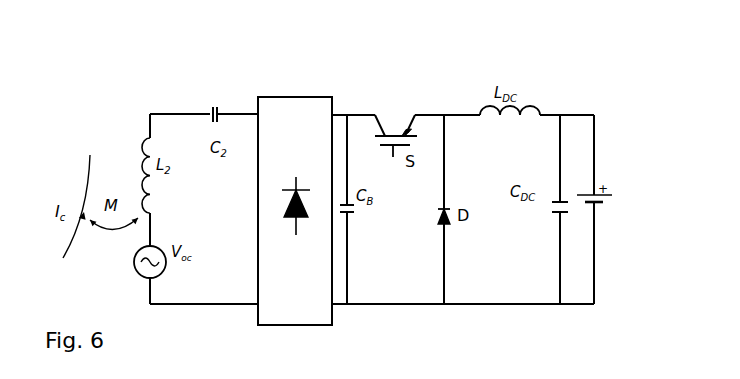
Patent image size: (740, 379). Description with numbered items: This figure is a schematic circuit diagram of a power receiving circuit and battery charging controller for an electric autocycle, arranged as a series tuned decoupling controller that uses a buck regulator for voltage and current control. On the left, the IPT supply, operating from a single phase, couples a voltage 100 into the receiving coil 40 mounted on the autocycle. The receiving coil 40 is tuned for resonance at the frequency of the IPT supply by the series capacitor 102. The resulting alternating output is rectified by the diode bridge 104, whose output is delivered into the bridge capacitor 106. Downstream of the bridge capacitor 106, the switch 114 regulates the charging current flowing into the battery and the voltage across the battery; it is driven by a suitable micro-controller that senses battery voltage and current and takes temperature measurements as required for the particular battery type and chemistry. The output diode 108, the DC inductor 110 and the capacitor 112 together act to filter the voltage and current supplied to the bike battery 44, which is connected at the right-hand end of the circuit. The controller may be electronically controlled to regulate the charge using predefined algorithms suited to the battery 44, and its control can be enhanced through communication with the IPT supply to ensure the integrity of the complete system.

The capacitor 102 is at (220, 102).
The receiving coil 40 is at (166, 175).
The voltage 100 is at (161, 270).
The diode bridge 104 is at (295, 211).
The bridge capacitor 106 is at (359, 209).
The switch 114 is at (396, 127).
The output diode 108 is at (457, 209).
The DC inductor 110 is at (510, 122).
The capacitor 112 is at (540, 209).
The battery 44 is at (600, 209).